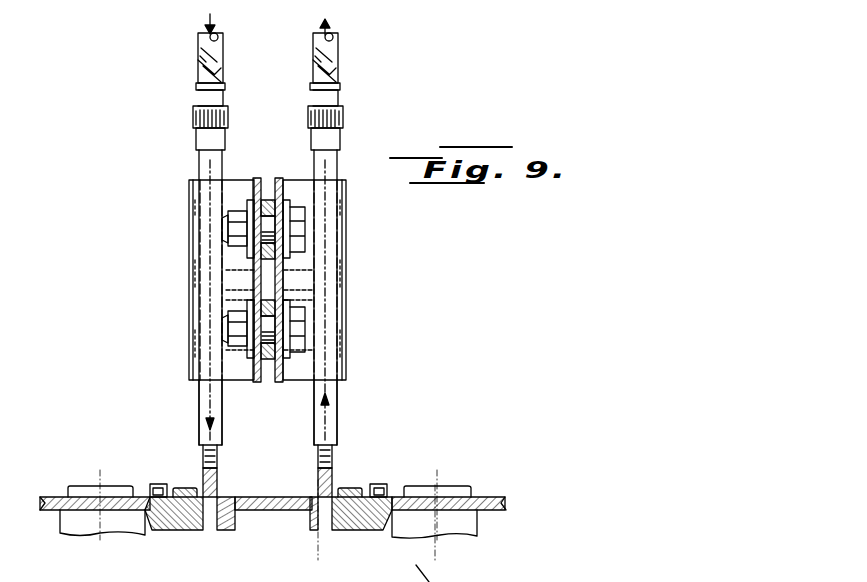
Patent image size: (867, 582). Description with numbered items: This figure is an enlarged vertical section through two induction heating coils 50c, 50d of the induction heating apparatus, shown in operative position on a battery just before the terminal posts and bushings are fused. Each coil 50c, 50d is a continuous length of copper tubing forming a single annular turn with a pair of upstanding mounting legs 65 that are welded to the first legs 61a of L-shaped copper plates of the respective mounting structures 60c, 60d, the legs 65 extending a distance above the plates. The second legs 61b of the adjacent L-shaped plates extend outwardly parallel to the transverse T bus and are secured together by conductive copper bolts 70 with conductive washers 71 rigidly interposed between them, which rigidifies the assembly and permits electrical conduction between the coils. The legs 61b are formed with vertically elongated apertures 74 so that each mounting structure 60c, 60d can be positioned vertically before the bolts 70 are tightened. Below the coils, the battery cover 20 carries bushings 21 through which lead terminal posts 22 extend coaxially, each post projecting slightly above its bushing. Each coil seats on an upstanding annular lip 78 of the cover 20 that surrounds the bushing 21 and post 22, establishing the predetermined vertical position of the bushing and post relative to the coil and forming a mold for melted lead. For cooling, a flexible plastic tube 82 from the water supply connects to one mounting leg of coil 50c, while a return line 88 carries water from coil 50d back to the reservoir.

The cover 20 is at (497, 496).
The bushing 21 is at (200, 531).
The terminal post 22 is at (330, 472).
The induction heating coil 50c is at (158, 484).
The induction heating coil 50d is at (378, 484).
The mounting structure 60c is at (188, 272).
The mounting structure 60d is at (348, 268).
The first leg 61a is at (228, 258).
The second leg 61b is at (252, 192).
The upstanding mounting leg 65 is at (203, 410).
The conductive bolt 70 is at (305, 216).
The conductive washer 71 is at (262, 182).
The vertically elongated aperture 74 is at (262, 250).
The upstanding annular lip 78 is at (316, 500).
The flexible plastic tube 82 is at (202, 62).
The return line 88 is at (338, 50).